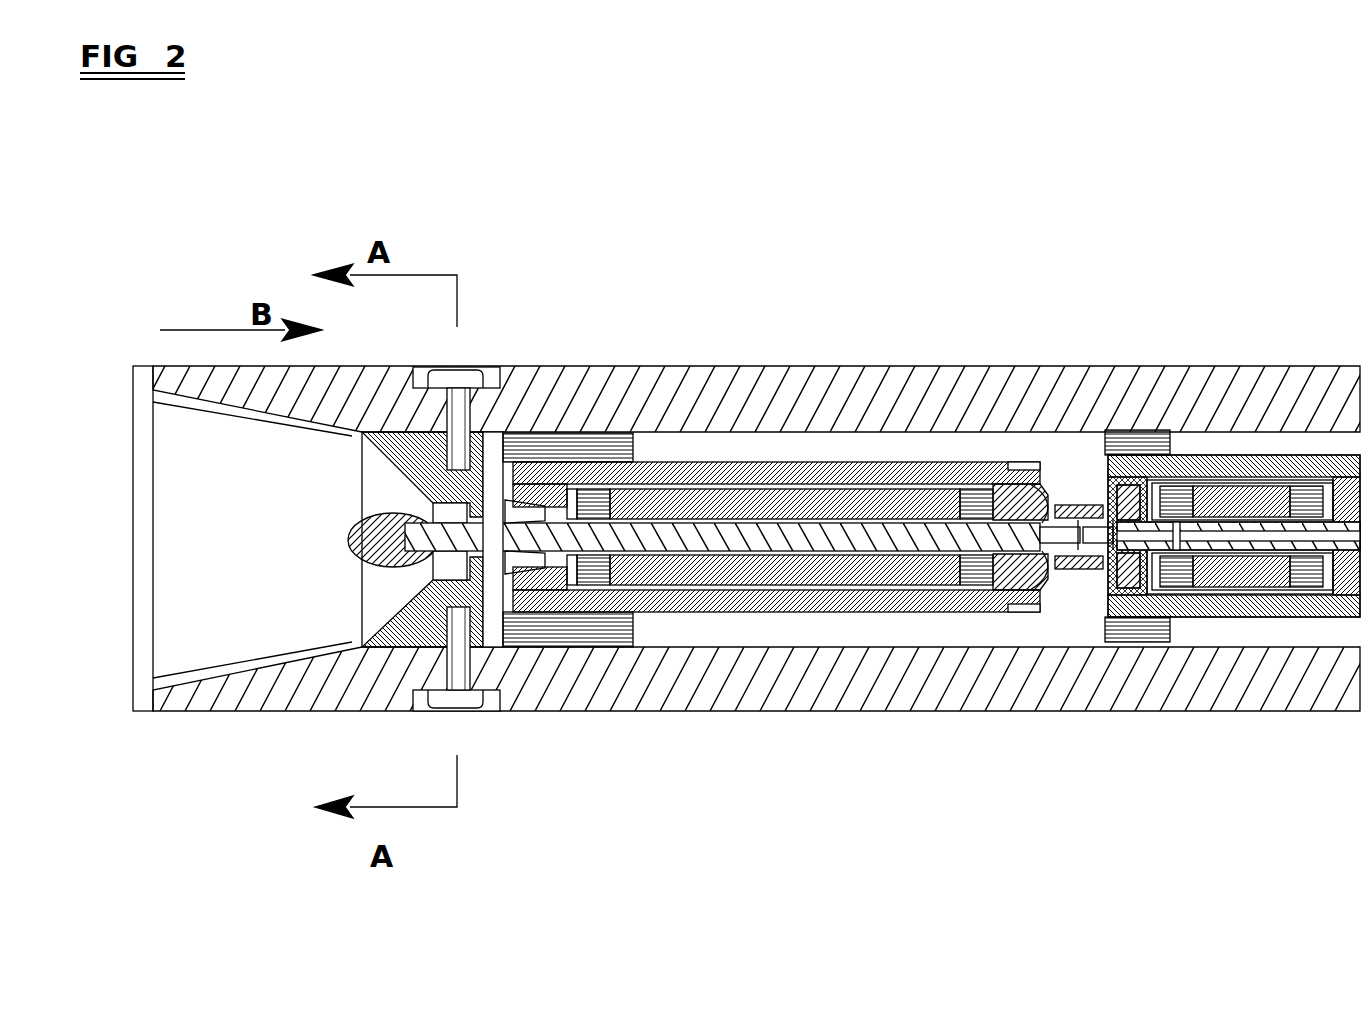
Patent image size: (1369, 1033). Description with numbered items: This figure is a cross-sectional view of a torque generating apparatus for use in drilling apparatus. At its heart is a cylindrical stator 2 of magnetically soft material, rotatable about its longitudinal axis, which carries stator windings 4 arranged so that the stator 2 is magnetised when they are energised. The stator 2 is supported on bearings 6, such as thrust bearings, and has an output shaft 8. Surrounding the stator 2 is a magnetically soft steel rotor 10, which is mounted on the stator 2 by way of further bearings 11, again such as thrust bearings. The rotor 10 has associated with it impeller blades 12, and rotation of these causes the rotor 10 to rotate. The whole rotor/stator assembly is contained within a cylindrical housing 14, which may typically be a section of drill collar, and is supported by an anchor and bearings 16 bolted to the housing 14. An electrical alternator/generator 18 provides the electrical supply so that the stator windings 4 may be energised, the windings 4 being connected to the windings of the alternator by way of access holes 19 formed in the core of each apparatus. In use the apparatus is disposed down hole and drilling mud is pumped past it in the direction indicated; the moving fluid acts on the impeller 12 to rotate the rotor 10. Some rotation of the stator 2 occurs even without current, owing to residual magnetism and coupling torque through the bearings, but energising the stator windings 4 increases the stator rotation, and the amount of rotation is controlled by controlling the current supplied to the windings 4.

The stator 2 is at (903, 612).
The stator windings 4 is at (545, 590).
The bearings 6 is at (491, 642).
The output shaft 8 is at (372, 556).
The rotor 10 is at (990, 617).
The bearings 11 is at (547, 578).
The impeller blades 12 is at (598, 592).
The cylindrical housing 14 is at (797, 677).
The anchor and bearings 16 is at (390, 650).
The electrical alternator/generator 18 is at (1246, 425).
The access holes 19 is at (1028, 460).